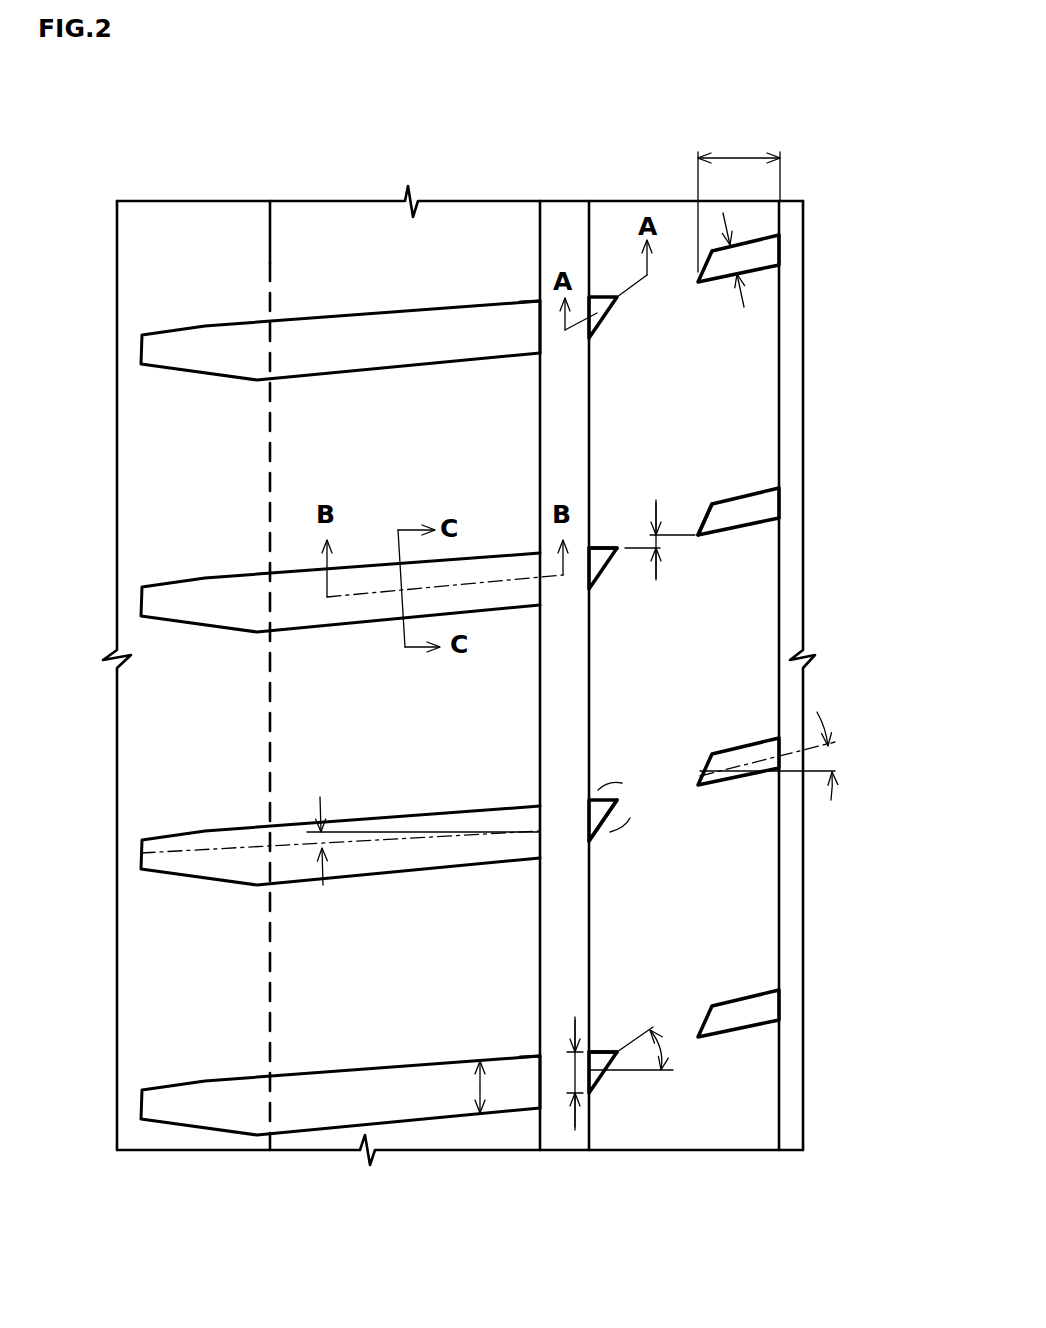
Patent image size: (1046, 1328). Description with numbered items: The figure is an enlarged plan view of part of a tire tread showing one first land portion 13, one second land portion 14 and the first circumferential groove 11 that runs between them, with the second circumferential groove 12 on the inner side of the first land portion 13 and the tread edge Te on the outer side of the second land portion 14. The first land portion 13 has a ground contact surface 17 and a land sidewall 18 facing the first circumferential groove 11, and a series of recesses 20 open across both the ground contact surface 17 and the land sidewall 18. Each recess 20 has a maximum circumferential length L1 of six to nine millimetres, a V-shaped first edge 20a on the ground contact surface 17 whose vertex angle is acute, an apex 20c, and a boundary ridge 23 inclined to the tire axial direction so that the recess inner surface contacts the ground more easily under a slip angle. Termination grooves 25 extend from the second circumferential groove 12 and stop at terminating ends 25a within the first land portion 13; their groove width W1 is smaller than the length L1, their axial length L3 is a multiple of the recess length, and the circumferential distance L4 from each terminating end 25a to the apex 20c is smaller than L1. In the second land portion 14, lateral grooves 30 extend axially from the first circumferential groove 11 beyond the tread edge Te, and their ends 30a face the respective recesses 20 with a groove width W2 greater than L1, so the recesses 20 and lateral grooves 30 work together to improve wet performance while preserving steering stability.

The first circumferential groove 11 is at (565, 235).
The second circumferential groove 12 is at (788, 1128).
The first land portion 13 is at (680, 237).
The second land portion 14 is at (365, 245).
The ground contact surface 17 is at (740, 1108).
The land sidewall 18 is at (589, 250).
The recess 20 is at (600, 318).
The first edge 20a is at (594, 836).
The apex 20c is at (616, 548).
The boundary ridge 23 is at (620, 1053).
The termination groove 25 is at (758, 260).
The terminating end 25a is at (697, 535).
The lateral groove 30 is at (337, 340).
The end of lateral groove 30a is at (522, 328).
The tread edge Te is at (270, 225).
The groove width of termination grooves W1 is at (740, 252).
The groove width of lateral grooves W2 is at (480, 1088).
The maximum length of recess L1 is at (575, 1072).
The length of termination grooves L3 is at (739, 198).
The distance L4 is at (660, 544).